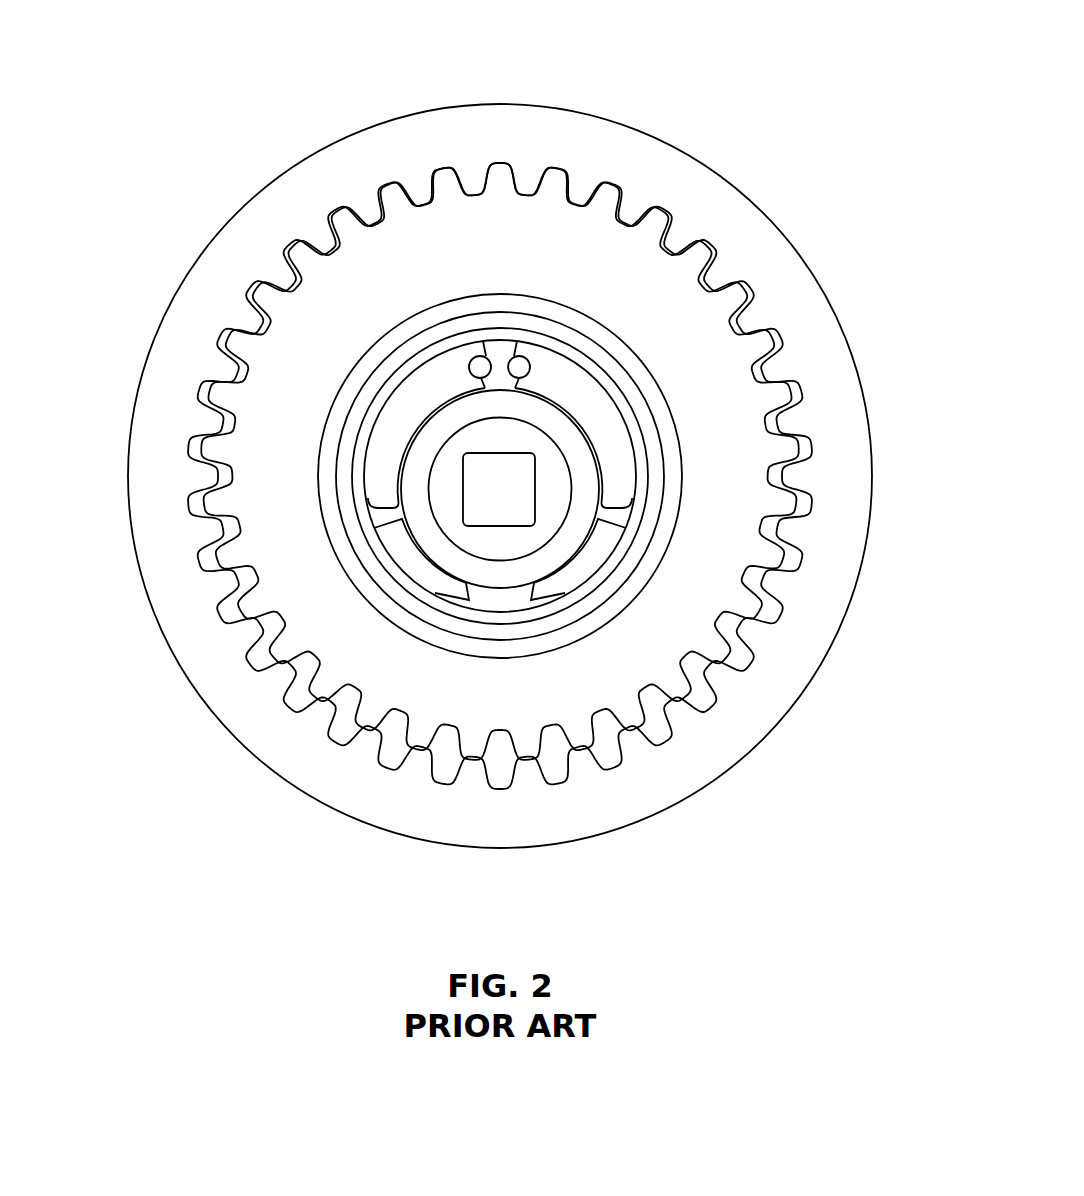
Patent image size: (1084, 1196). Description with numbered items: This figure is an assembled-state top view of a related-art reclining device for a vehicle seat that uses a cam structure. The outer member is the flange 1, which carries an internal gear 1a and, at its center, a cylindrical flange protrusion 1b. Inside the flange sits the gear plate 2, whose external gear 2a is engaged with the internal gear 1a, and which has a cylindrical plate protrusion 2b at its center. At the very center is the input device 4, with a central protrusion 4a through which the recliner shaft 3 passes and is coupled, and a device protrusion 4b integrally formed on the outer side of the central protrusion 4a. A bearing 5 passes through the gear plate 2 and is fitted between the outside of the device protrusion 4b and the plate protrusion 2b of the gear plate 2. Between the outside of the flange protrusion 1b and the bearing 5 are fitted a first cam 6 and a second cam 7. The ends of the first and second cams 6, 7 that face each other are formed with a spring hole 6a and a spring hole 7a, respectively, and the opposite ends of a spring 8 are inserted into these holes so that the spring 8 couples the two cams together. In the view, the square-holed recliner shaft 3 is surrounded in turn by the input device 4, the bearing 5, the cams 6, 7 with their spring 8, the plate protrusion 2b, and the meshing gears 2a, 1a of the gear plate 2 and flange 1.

The flange 1 is at (157, 486).
The internal gear 1a is at (521, 493).
The flange protrusion 1b is at (152, 403).
The gear plate 2 is at (572, 464).
The external gear 2a is at (526, 461).
The plate protrusion 2b is at (637, 476).
The recliner shaft 3 is at (591, 673).
The input device 4 is at (172, 892).
The central protrusion 4a is at (346, 599).
The device protrusion 4b is at (535, 698).
The bearing 5 is at (640, 476).
The first cam 6 is at (313, 367).
The spring hole 6a is at (330, 265).
The second cam 7 is at (722, 448).
The spring hole 7a is at (672, 263).
The spring 8 is at (500, 216).